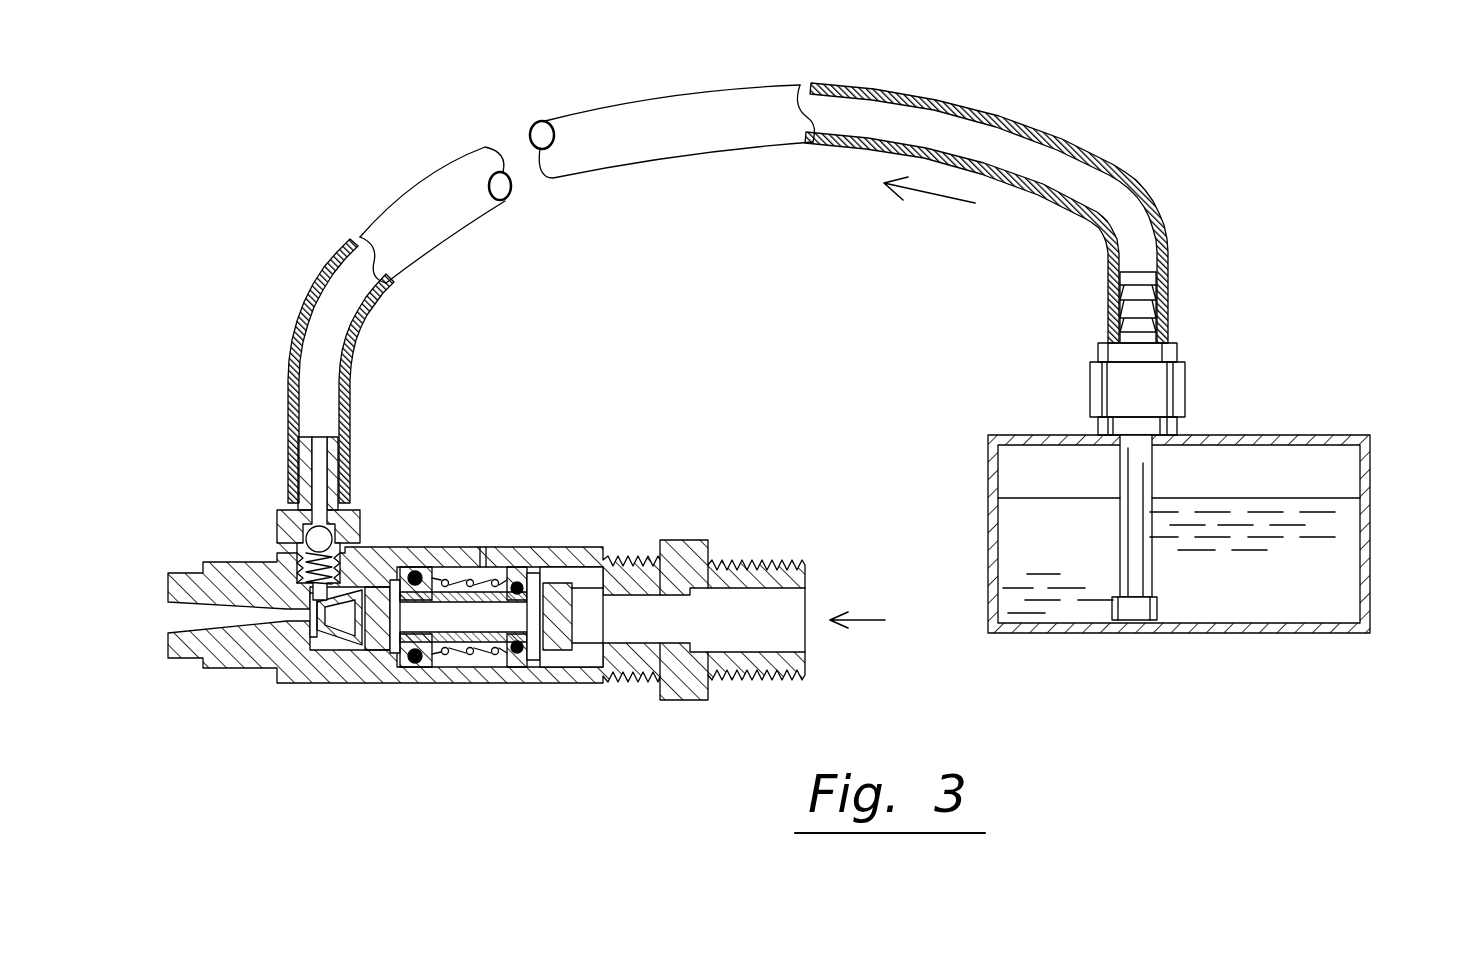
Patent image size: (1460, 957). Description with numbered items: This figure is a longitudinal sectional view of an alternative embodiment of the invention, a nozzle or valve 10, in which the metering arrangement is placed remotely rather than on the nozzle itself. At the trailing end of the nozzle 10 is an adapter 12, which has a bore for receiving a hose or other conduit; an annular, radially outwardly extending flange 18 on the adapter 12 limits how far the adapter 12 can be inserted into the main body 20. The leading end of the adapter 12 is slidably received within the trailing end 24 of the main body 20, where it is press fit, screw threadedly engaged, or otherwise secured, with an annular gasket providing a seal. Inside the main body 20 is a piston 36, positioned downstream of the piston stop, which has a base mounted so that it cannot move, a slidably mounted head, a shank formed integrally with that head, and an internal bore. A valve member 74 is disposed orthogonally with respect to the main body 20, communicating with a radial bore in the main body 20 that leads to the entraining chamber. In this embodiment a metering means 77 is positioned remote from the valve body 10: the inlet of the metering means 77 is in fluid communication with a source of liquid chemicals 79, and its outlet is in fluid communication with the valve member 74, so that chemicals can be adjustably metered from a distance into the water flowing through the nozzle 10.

The nozzle or valve 10 is at (623, 429).
The adapter 12 is at (756, 556).
The annular flange 18 is at (688, 540).
The main body 20 is at (458, 545).
The trailing end of main body 24 is at (645, 556).
The piston 36 is at (470, 660).
The valve member 74 is at (289, 426).
The metering means 77 is at (1199, 324).
The source of liquid chemicals 79 is at (1372, 548).